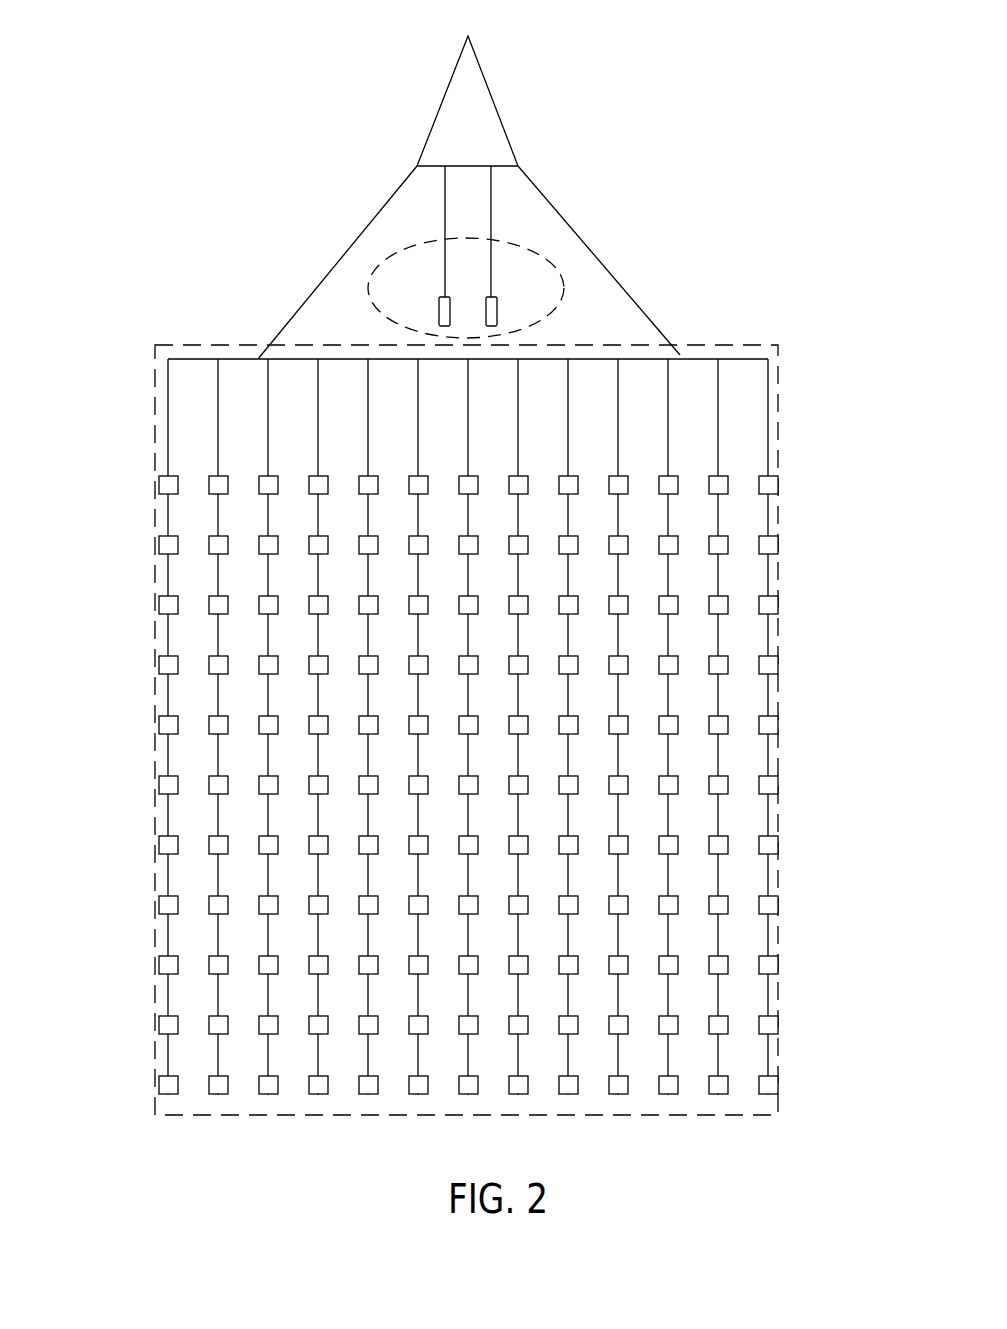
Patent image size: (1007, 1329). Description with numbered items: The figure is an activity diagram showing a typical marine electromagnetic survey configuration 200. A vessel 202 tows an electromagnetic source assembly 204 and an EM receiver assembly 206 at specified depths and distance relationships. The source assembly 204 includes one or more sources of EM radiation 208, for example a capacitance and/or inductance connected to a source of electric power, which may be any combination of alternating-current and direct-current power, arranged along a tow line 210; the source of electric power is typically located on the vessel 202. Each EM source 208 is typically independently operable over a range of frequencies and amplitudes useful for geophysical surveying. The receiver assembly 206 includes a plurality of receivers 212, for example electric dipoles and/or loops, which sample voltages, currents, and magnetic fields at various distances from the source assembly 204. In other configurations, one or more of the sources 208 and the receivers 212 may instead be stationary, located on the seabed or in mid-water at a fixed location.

The marine electromagnetic survey configuration 200 is at (710, 42).
The vessel 202 is at (445, 97).
The electromagnetic source assembly 204 is at (565, 288).
The EM receiver assembly 206 is at (780, 568).
The source of EM radiation 208 is at (438, 307).
The tow line 210 is at (445, 260).
The receiver 212 is at (159, 605).